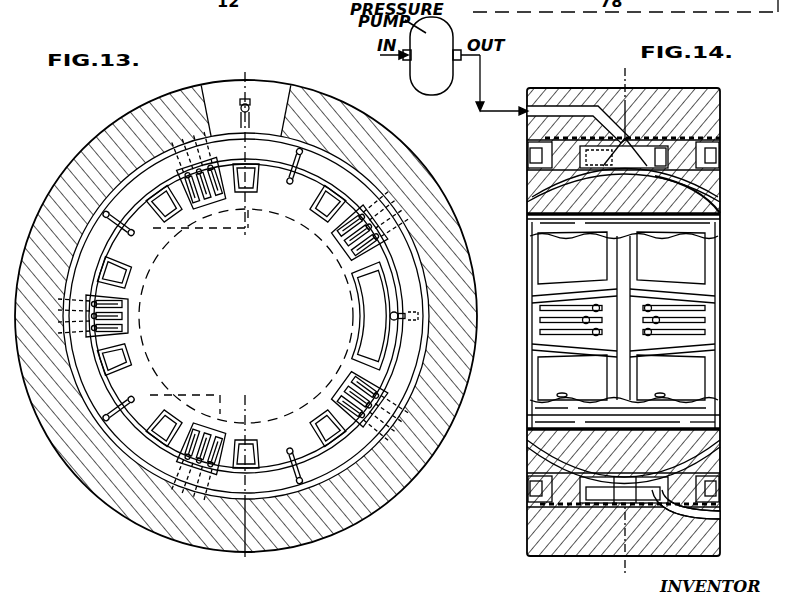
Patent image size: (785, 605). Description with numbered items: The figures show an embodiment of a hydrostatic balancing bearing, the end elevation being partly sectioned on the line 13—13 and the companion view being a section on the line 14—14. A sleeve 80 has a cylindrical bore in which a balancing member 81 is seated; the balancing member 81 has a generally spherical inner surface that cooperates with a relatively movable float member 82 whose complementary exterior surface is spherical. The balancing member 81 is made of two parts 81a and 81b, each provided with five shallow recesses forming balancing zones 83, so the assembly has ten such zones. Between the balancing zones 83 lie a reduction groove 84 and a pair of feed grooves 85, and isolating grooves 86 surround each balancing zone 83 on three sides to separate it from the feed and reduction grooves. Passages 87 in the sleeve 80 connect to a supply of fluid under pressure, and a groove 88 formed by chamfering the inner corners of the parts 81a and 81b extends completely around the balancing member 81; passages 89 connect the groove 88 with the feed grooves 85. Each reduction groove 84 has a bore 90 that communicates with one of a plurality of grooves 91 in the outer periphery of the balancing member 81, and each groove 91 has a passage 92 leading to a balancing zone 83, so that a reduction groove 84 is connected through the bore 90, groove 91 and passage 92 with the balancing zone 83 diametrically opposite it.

In FIG. 14, the section line 13— 13 is at (640, 76).
In FIG. 13, the section line 14— 14 is at (256, 69).
In FIG. 13, the sleeve 80 is at (322, 100).
In FIG. 14, the sleeve 80 is at (703, 98).
In FIG. 13, the balancing member 81 is at (356, 181).
In FIG. 14, the balancing member 81 is at (641, 190).
In FIG. 14, the balancing member part 81a is at (722, 460).
In FIG. 14, the balancing member part 81b is at (537, 456).
In FIG. 13, the float member 82 is at (332, 243).
In FIG. 14, the float member 82 is at (700, 200).
In FIG. 13, the balancing zone 83 is at (318, 183).
In FIG. 14, the balancing zone 83 is at (717, 214).
In FIG. 13, the reduction groove 84 is at (352, 392).
In FIG. 14, the reduction groove 84 is at (703, 323).
In FIG. 13, the feed groove 85 is at (380, 387).
In FIG. 14, the feed groove 85 is at (703, 310).
In FIG. 13, the isolating groove 86 is at (362, 358).
In FIG. 14, the isolating groove 86 is at (538, 350).
In FIG. 13, the passage 87 is at (251, 103).
In FIG. 14, the passage 87 is at (530, 106).
In FIG. 14, the groove 88 is at (630, 136).
In FIG. 13, the passage 89 is at (440, 208).
In FIG. 14, the passage 89 is at (717, 151).
In FIG. 13, the bore 90 is at (417, 193).
In FIG. 14, the bore 90 is at (700, 517).
In FIG. 13, the groove 91 is at (366, 462).
In FIG. 14, the groove 91 is at (533, 110).
In FIG. 13, the passage 92 is at (320, 523).
In FIG. 14, the passage 92 is at (697, 143).